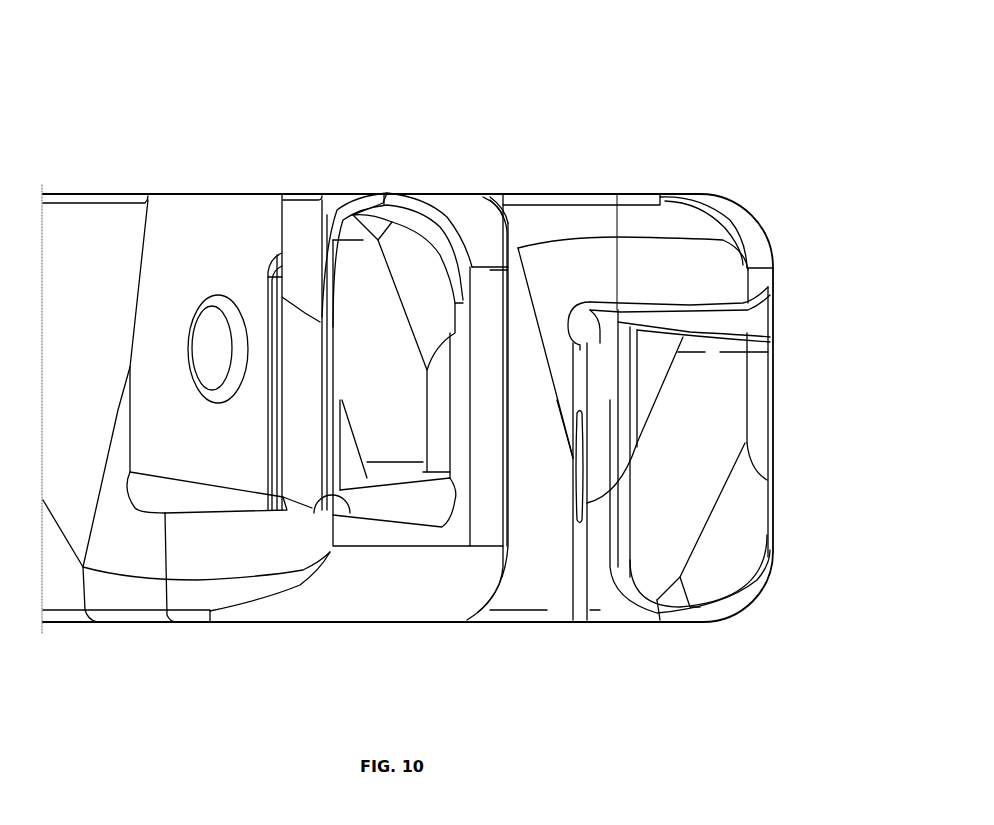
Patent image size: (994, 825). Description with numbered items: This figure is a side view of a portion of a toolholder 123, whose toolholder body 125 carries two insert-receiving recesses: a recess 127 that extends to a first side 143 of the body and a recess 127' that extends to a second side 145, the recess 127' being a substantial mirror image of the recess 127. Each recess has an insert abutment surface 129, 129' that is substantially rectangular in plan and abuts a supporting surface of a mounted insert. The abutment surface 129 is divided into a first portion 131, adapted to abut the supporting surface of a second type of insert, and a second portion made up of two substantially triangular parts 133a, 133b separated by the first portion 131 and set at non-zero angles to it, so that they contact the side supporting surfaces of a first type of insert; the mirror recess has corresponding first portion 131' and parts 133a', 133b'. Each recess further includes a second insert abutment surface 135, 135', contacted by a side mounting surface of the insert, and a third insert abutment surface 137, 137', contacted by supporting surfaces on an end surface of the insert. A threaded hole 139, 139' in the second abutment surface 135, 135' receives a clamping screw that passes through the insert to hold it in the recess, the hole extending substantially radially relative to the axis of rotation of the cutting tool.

The toolholder 123 is at (503, 106).
The toolholder body 125 is at (616, 196).
The insert-receiving recess 127 is at (691, 637).
The insert-receiving recess 127' is at (227, 291).
The insert abutment surface 129 is at (733, 534).
The insert abutment surface 129' is at (415, 200).
The first portion 131 is at (747, 521).
The first portion 131' is at (386, 303).
The first part of second portion 133a is at (728, 506).
The first part of second portion 133a' is at (449, 377).
The second part of second portion 133b is at (717, 452).
The second part of second portion 133b' is at (344, 337).
The second insert abutment surface 135 is at (663, 481).
The second insert abutment surface 135' is at (206, 371).
The third insert abutment surface 137 is at (702, 427).
The third insert abutment surface 137' is at (280, 358).
The threaded hole 139 is at (697, 516).
The threaded hole 139' is at (184, 276).
The first side 143 is at (105, 622).
The second side 145 is at (682, 190).